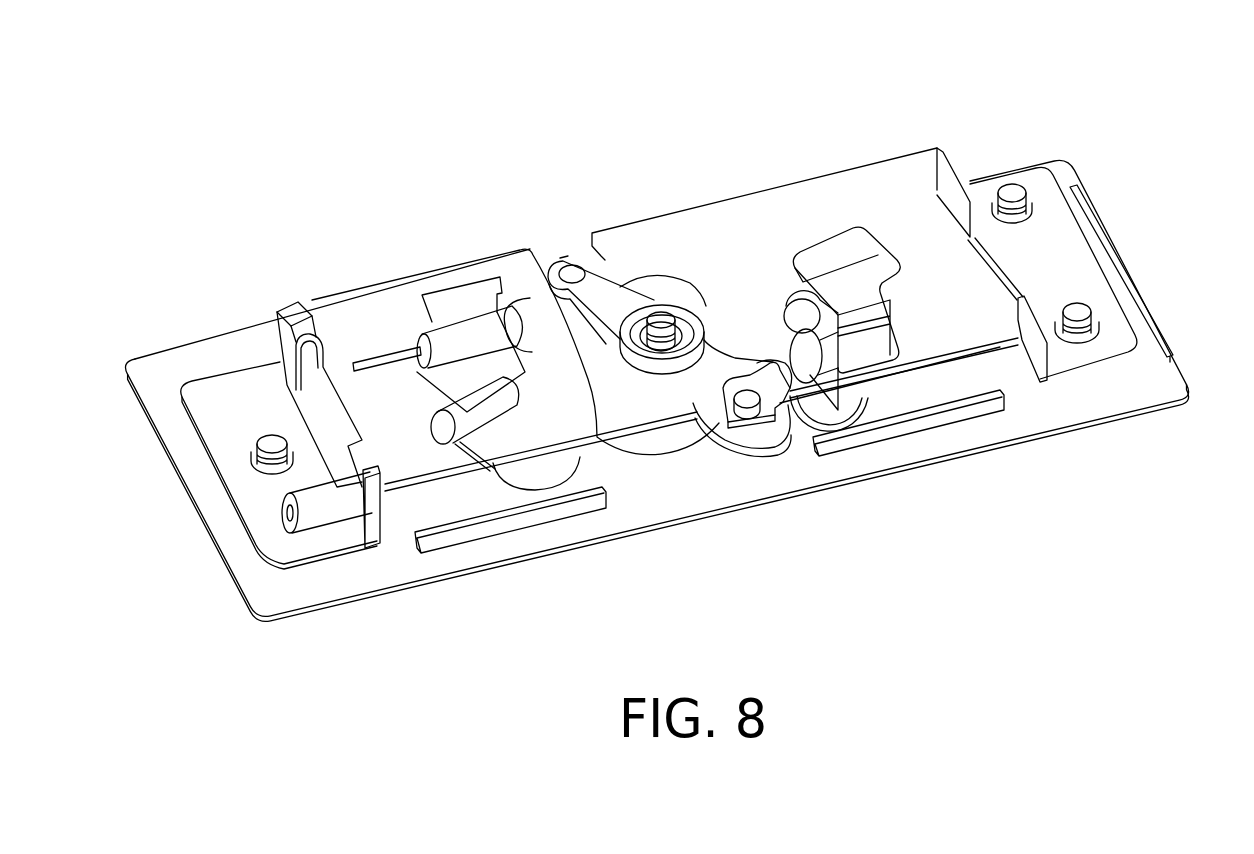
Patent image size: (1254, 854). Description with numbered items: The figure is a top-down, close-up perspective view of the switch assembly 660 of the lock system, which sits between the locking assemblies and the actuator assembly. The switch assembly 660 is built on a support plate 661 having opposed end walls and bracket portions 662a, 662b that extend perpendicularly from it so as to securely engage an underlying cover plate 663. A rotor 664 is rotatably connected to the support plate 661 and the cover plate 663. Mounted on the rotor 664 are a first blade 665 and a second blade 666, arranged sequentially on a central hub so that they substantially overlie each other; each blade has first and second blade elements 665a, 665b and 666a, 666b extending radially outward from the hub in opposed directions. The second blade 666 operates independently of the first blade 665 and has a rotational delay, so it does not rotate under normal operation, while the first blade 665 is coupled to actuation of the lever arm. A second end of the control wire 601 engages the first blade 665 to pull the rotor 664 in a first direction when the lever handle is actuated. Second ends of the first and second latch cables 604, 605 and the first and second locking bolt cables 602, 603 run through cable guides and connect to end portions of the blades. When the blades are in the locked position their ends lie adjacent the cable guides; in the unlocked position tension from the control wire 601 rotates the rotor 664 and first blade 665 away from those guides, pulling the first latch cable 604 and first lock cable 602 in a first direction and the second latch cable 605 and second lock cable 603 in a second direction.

The switch assembly 660 is at (192, 100).
The support plate 661 is at (305, 305).
The first bracket portion 662a is at (212, 383).
The second bracket portion 662b is at (1083, 279).
The cover plate 663 is at (281, 603).
The control wire 601 is at (421, 481).
The first locking bolt cable 602 is at (484, 462).
The second locking bolt cable 603 is at (880, 277).
The first latch cable 604 is at (390, 357).
The second latch cable 605 is at (948, 330).
The rotor 664 is at (661, 320).
The first blade 665 is at (703, 346).
The first blade element of first blade 665a is at (566, 257).
The second blade element of first blade 665b is at (764, 414).
The second blade 666 is at (552, 385).
The first blade element of second blade 666a is at (545, 268).
The second blade element of second blade 666b is at (744, 452).